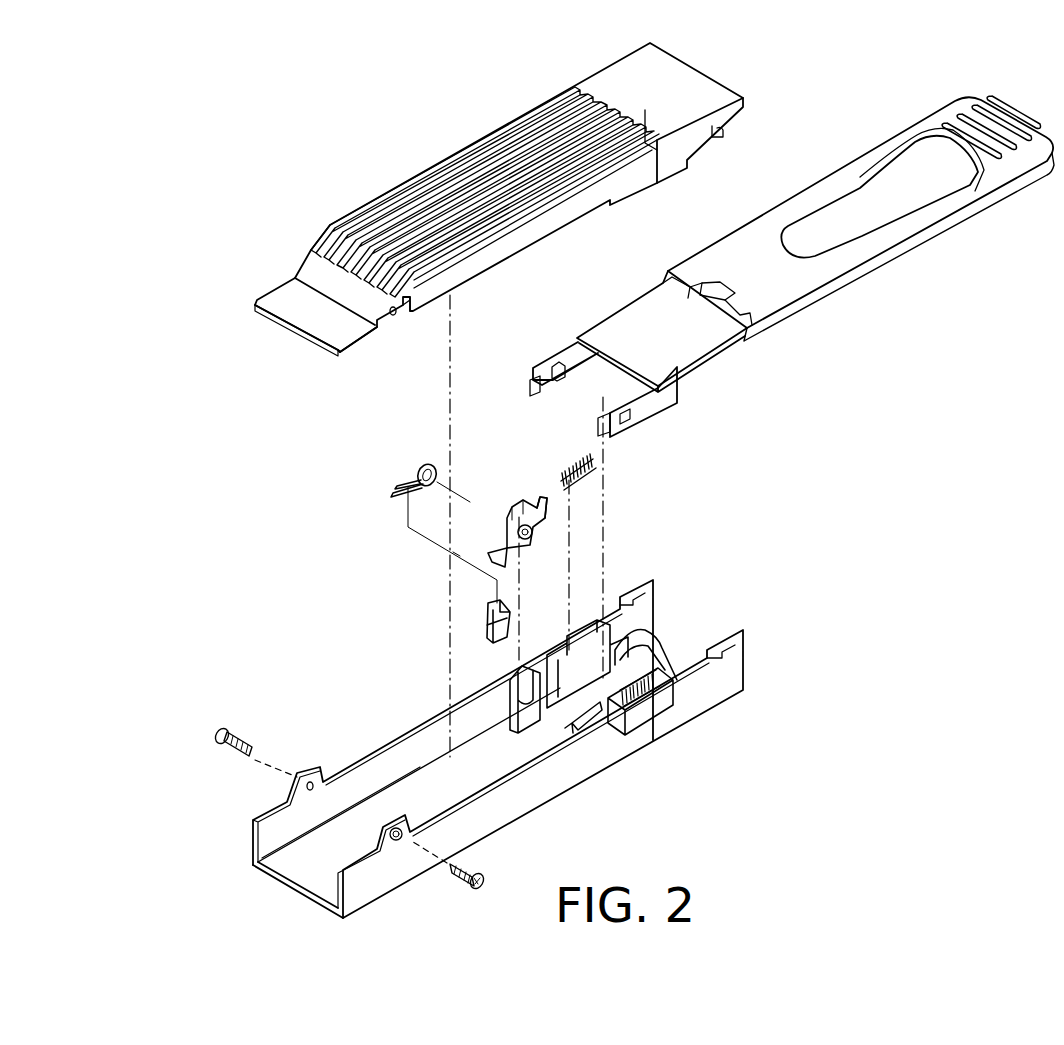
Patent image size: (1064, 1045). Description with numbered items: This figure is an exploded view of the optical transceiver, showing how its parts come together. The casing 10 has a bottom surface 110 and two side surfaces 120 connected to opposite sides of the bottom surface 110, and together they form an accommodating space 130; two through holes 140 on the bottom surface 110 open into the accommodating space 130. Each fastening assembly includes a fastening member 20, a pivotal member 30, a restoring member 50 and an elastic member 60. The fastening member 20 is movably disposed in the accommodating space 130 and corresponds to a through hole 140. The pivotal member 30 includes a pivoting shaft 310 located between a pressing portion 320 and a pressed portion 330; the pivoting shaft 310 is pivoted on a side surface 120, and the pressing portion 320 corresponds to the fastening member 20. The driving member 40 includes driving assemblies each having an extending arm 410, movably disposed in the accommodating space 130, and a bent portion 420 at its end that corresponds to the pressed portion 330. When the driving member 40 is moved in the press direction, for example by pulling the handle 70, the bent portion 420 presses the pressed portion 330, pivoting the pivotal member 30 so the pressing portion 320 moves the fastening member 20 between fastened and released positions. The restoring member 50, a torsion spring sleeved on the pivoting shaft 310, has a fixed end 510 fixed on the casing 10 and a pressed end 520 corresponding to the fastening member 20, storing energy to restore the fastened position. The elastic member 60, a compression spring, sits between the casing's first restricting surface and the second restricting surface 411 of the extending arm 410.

The casing 10 is at (236, 833).
The fastening member 20 is at (484, 620).
The pivotal member 30 is at (518, 502).
The driving member 40 is at (711, 360).
The restoring member 50 is at (435, 452).
The elastic member 60 is at (567, 468).
The handle 70 is at (921, 224).
The bottom surface 110 is at (307, 870).
The side surface 120 is at (268, 838).
The accommodating space 130 is at (408, 761).
The through hole 140 is at (490, 731).
The pivoting shaft 310 is at (535, 540).
The pressing portion 320 is at (498, 557).
The pressed portion 330 is at (545, 512).
The extending arm 410 is at (570, 355).
The second restricting surface 411 is at (563, 370).
The bent portion 420 is at (530, 385).
The fixed end 510 is at (415, 477).
The pressed end 520 is at (398, 497).